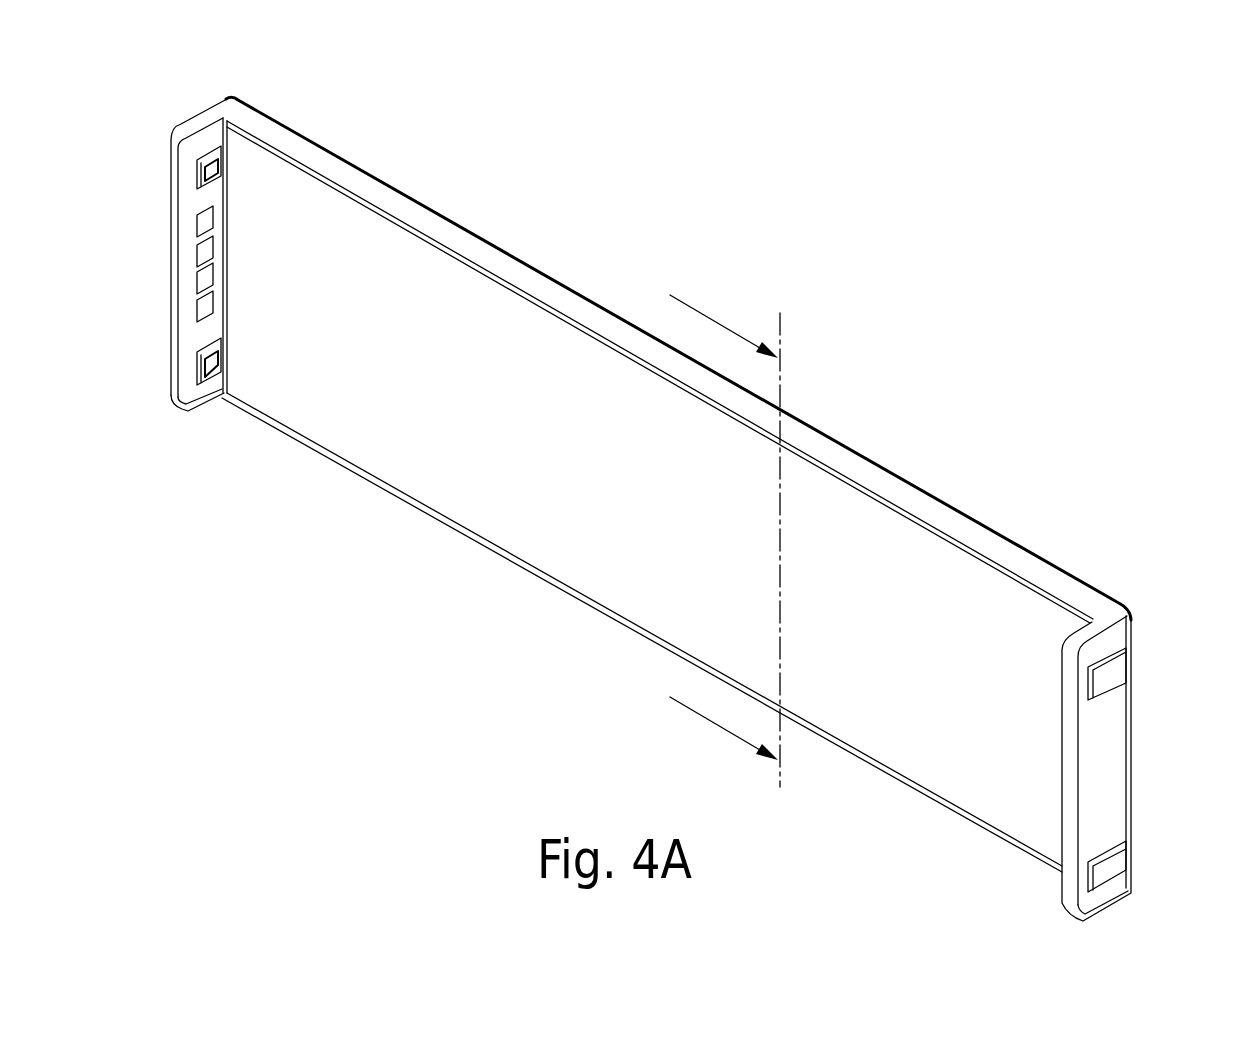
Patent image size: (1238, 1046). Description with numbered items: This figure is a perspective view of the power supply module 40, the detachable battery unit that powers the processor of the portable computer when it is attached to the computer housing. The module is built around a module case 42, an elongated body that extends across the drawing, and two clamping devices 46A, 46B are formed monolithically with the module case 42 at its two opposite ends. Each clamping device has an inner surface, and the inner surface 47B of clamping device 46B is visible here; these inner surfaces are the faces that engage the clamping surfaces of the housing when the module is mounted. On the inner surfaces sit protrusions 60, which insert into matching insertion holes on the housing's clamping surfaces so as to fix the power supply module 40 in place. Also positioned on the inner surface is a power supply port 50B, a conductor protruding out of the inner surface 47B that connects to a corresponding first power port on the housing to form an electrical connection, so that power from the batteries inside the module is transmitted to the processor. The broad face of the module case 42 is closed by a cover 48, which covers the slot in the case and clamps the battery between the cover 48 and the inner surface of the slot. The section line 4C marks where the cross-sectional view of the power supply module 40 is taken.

The power supply module 40 is at (650, 489).
The module case 42 is at (458, 243).
The cover 48 is at (525, 540).
The clamping device 46A is at (1103, 625).
The clamping device 46B is at (202, 239).
The inner surface 47B is at (193, 240).
The power supply port 50B is at (196, 283).
The protrusion 60 is at (205, 178).
The line 4C— 4C is at (725, 532).